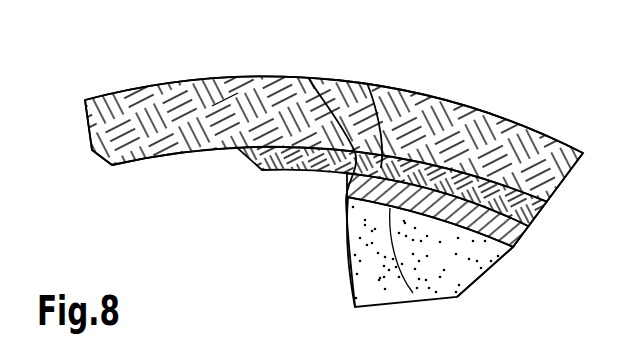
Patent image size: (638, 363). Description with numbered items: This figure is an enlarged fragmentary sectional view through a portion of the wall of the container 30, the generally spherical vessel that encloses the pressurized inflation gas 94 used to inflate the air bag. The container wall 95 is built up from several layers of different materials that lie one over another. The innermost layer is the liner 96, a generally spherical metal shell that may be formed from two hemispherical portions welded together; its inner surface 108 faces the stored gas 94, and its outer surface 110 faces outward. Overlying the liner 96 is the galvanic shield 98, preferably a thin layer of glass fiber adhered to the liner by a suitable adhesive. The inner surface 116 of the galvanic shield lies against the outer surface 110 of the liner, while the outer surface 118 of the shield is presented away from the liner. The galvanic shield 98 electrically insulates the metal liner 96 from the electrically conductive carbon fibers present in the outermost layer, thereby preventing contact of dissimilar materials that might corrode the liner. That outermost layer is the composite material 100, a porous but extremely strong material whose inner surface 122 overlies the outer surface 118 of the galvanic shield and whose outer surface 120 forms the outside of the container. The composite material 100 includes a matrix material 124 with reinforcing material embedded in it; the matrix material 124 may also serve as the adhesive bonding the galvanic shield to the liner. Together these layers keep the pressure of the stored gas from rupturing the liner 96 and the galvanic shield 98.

The container 30 is at (178, 56).
The gas 94 is at (363, 247).
The container wall 95 is at (96, 82).
The liner 96 is at (308, 77).
The galvanic shield 98 is at (367, 83).
The composite material 100 is at (463, 118).
The inner surface 108 is at (413, 293).
The outer surface 110 is at (527, 222).
The inner surface 116 is at (288, 171).
The outer surface 118 is at (420, 172).
The outer surface 120 is at (527, 127).
The inner surface 122 is at (143, 162).
The matrix material 124 is at (227, 98).